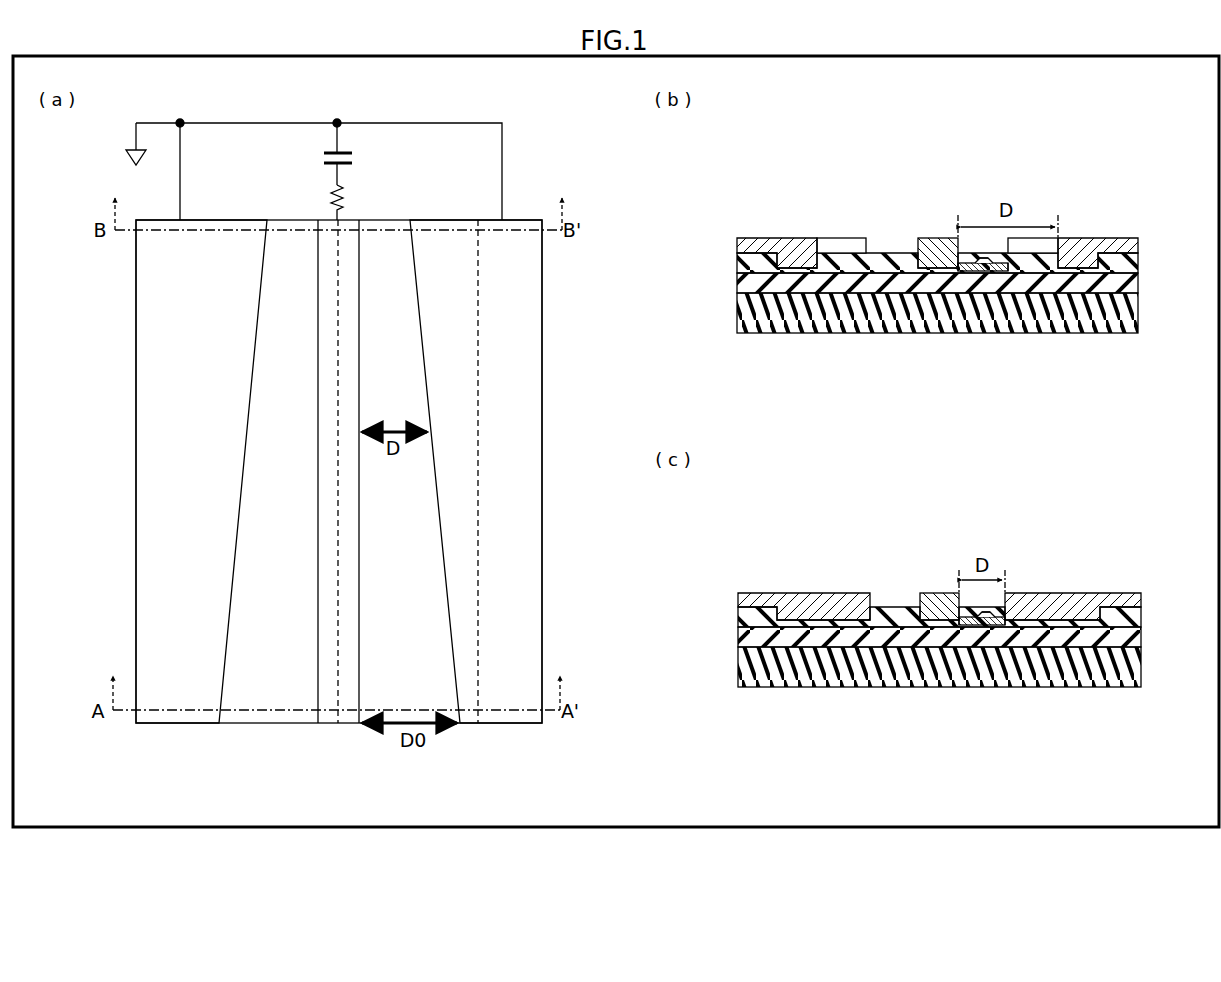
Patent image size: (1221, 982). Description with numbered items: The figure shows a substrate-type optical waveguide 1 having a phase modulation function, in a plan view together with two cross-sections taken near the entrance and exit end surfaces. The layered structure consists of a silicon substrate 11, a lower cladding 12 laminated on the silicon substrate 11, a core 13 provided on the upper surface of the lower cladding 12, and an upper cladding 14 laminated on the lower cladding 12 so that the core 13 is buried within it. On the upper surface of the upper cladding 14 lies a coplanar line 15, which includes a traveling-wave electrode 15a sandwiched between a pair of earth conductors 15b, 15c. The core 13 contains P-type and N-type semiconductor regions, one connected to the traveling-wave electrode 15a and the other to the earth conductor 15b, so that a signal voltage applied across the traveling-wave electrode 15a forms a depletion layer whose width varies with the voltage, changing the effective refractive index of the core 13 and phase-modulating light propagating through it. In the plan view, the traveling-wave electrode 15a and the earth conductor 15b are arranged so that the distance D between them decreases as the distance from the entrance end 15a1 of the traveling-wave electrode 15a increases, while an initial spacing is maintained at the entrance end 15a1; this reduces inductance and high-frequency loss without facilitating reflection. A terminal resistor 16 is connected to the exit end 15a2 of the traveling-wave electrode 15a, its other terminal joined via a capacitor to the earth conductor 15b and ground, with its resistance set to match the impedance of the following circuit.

The substrate-type optical waveguide 1 is at (528, 163).
The silicon substrate 11 is at (440, 220).
The lower cladding 12 is at (1138, 286).
The core 13 is at (478, 517).
The upper cladding 14 is at (1138, 265).
The coplanar line 15 is at (638, 480).
The traveling-wave electrode 15a is at (583, 482).
The entrance end 15a1 is at (318, 725).
The exit end 15a2 is at (322, 220).
The earth conductor 15b is at (775, 482).
The earth conductor 15c is at (180, 725).
The terminal resistor 16 is at (330, 188).